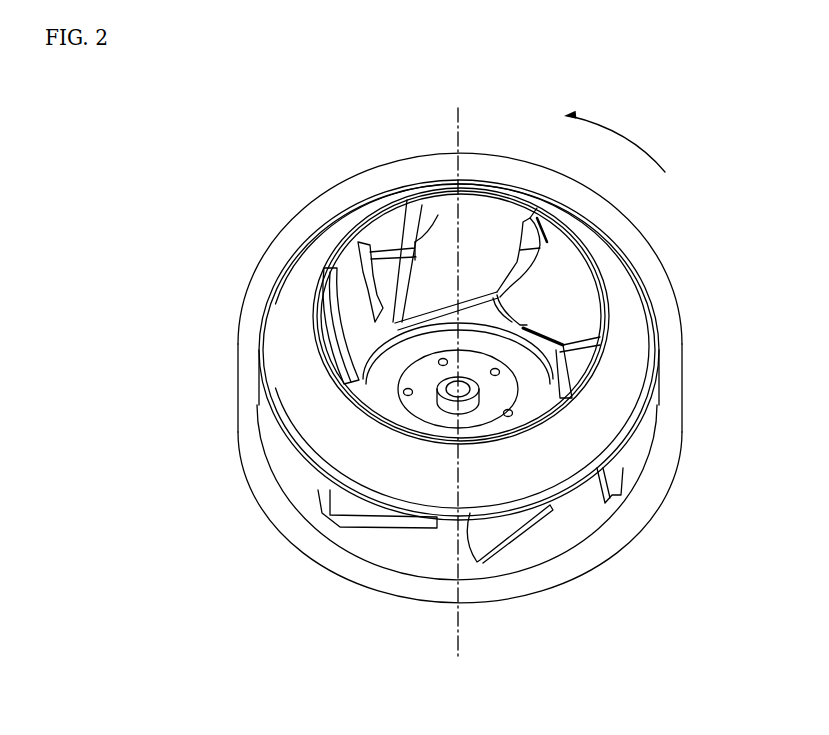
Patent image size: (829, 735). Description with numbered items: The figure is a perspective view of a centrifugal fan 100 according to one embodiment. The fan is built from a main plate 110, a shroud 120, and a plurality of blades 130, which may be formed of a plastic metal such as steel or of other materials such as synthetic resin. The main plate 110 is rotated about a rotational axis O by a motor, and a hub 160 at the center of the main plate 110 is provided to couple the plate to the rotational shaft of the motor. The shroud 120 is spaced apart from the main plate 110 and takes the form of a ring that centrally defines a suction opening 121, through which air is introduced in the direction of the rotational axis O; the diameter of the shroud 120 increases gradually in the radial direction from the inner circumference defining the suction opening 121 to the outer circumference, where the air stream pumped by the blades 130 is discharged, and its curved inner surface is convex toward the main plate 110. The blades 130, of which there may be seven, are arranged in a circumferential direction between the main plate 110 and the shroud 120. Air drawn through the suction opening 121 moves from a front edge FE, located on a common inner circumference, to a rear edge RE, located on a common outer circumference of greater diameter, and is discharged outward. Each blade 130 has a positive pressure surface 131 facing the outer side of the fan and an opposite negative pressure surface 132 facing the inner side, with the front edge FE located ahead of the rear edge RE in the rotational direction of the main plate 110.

The centrifugal fan 100 is at (198, 172).
The main plate 110 is at (292, 484).
The shroud 120 is at (262, 316).
The suction opening 121 is at (341, 327).
The blades 130 is at (438, 235).
The positive pressure surface 131 is at (325, 357).
The negative pressure surface 132 is at (350, 258).
The hub 160 is at (410, 403).
The front edge FE is at (418, 255).
The rear edge RE is at (545, 238).
The rotational axis O is at (459, 367).